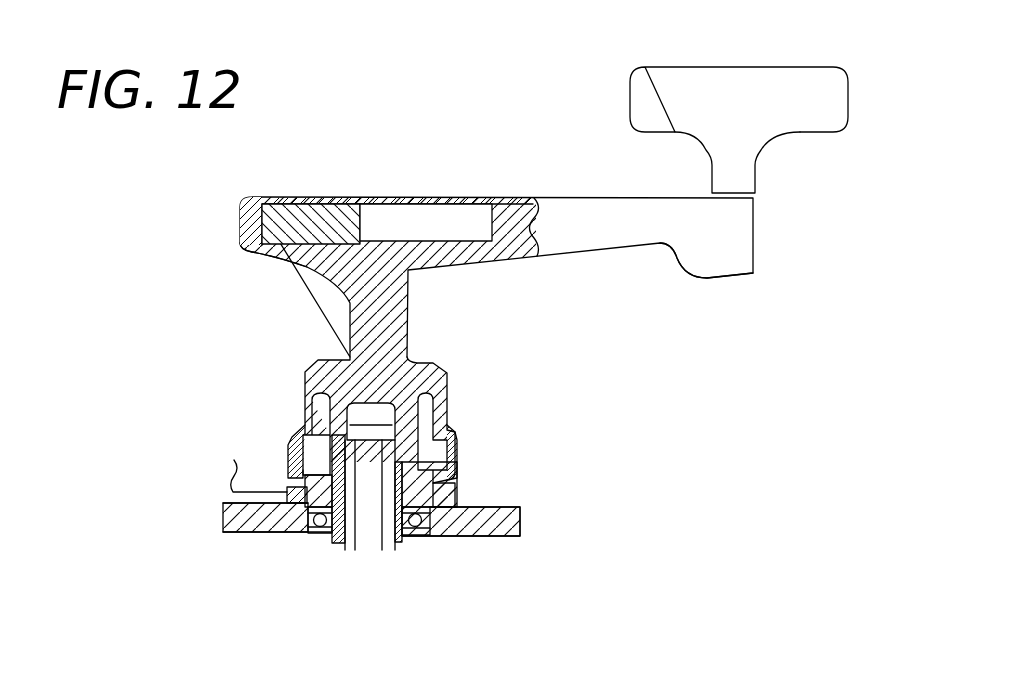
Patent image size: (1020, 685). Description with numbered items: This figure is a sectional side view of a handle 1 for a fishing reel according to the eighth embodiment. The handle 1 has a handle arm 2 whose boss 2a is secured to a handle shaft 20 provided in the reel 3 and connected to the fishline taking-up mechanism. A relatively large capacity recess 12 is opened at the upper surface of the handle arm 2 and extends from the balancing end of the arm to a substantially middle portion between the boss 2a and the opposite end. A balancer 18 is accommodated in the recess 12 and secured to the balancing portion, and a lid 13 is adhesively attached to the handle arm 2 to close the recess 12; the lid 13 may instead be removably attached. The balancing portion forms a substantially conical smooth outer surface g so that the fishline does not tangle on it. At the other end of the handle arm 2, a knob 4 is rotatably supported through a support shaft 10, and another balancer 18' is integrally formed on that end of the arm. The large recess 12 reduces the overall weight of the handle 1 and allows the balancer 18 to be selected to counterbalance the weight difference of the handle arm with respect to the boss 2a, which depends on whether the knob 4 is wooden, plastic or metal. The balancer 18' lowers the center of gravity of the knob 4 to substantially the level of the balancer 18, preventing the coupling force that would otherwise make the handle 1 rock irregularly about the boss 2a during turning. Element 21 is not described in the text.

The handle 1 is at (385, 150).
The handle arm 2 is at (567, 207).
The boss 2a is at (447, 380).
The reel 3 is at (520, 522).
The knob 4 is at (796, 80).
The support shaft 10 is at (727, 193).
The recess 12 is at (470, 222).
The lid 13 is at (420, 198).
The balancer 18 is at (311, 188).
The balancer 18' is at (723, 293).
The handle shaft 20 is at (367, 530).
The rim 21 is at (252, 213).
The smooth outer surface g is at (240, 260).